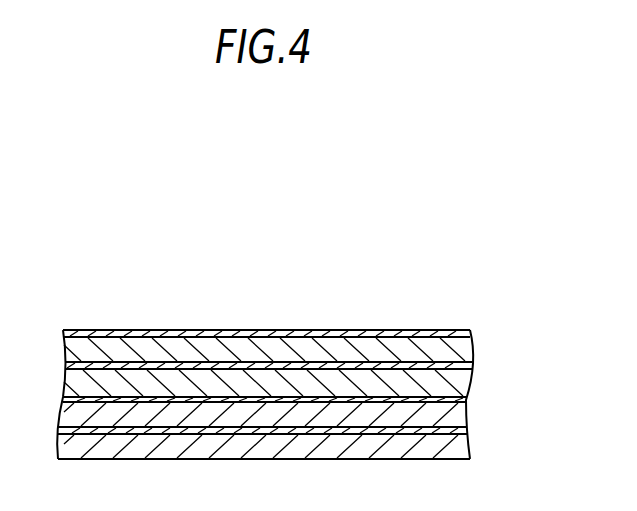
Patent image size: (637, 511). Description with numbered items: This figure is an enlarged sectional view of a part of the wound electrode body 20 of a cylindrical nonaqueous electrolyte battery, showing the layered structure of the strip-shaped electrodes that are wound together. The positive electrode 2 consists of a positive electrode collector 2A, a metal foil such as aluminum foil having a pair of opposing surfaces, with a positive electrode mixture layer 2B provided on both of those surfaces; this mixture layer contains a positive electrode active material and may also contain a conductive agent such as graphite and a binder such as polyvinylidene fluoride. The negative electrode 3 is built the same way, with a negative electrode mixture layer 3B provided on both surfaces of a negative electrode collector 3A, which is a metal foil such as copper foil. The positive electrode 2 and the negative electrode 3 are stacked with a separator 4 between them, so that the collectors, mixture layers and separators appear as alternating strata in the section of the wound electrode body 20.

The wound electrode body 20 is at (423, 179).
The positive electrode 2 is at (225, 248).
The positive electrode collector 2A is at (105, 363).
The positive electrode mixture layer 2B is at (170, 380).
The negative electrode 3 is at (385, 248).
The negative electrode collector 3A is at (262, 423).
The negative electrode mixture layer 3B is at (328, 443).
The separator 4 is at (408, 400).